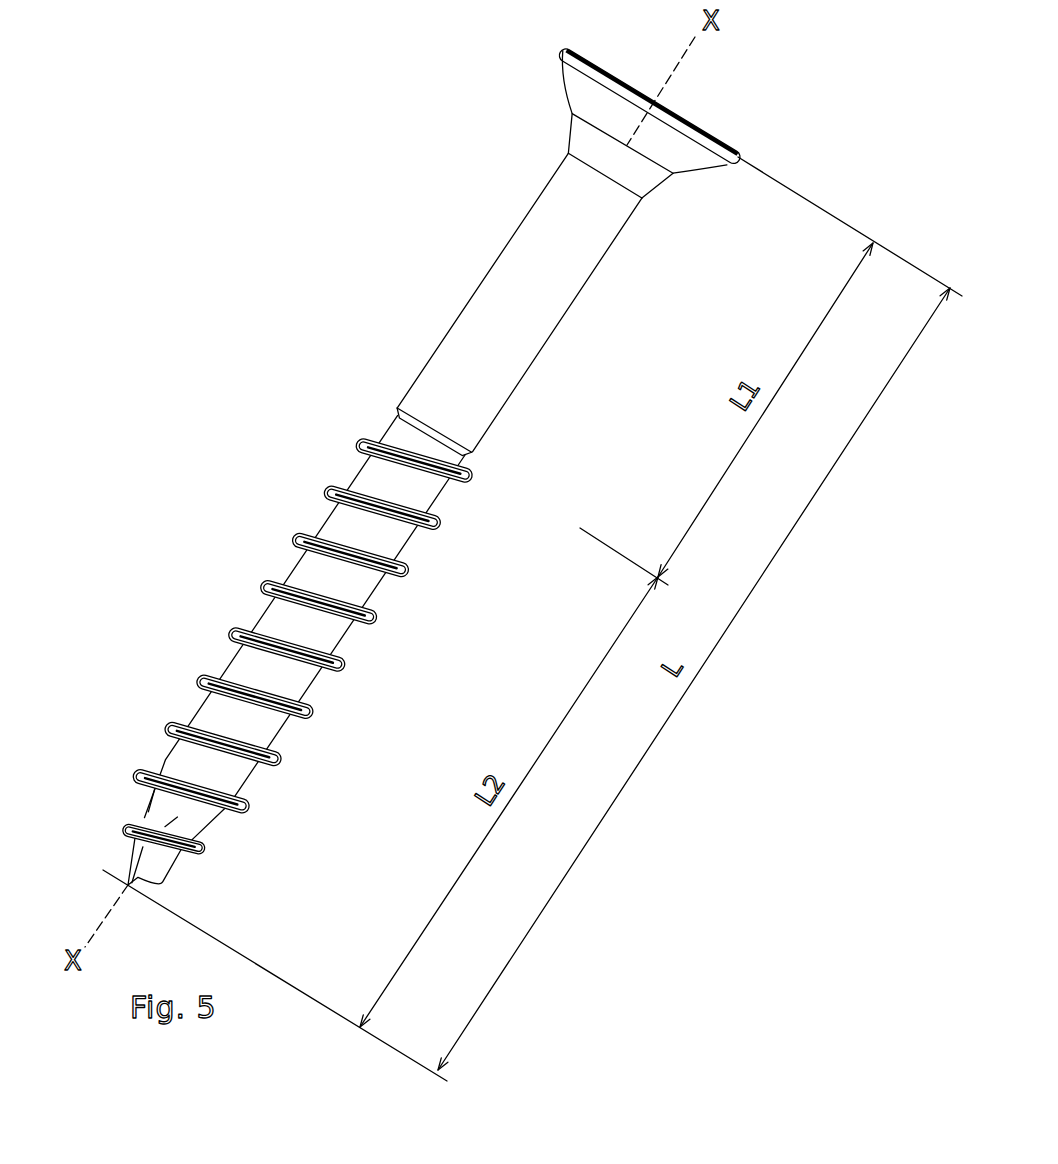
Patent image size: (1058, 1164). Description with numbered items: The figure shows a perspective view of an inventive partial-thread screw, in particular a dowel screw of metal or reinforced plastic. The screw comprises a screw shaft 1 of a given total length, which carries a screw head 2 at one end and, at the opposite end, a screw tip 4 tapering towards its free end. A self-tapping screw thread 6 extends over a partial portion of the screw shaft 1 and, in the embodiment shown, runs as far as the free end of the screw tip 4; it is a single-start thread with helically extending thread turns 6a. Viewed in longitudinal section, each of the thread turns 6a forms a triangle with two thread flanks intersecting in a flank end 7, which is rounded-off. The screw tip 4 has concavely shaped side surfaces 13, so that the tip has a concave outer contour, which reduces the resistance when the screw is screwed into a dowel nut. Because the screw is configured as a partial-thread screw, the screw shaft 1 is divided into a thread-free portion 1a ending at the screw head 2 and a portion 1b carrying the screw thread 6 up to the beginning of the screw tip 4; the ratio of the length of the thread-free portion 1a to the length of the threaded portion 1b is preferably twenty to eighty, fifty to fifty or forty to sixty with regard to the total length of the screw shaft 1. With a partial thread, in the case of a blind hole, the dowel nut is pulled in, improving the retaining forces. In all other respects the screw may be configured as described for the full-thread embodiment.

The screw shaft 1 is at (398, 499).
The thread-free portion 1a is at (512, 340).
The portion having the screw thread 1b is at (265, 720).
The screw head 2 is at (678, 163).
The screw tip 4 is at (195, 855).
The screw thread 6 is at (343, 658).
The thread turns 6a is at (410, 562).
The flank end 7 is at (455, 455).
The side surfaces 13 is at (153, 813).